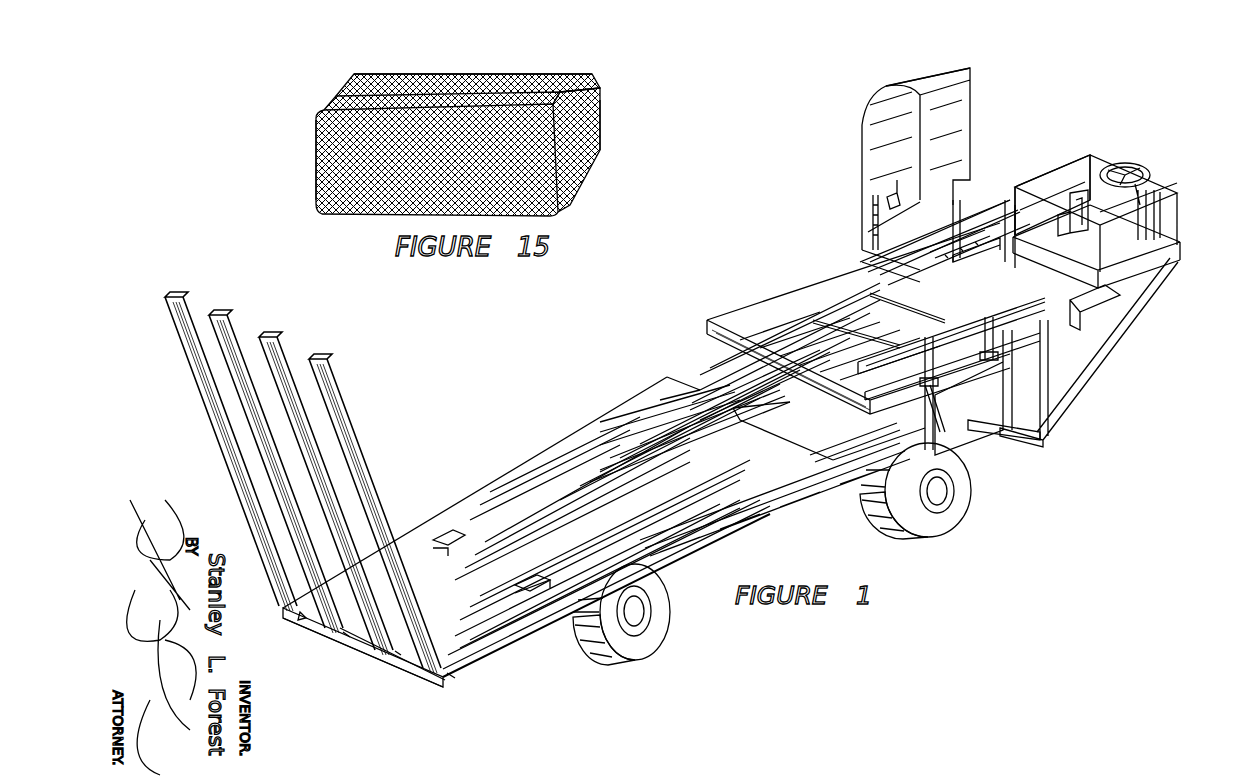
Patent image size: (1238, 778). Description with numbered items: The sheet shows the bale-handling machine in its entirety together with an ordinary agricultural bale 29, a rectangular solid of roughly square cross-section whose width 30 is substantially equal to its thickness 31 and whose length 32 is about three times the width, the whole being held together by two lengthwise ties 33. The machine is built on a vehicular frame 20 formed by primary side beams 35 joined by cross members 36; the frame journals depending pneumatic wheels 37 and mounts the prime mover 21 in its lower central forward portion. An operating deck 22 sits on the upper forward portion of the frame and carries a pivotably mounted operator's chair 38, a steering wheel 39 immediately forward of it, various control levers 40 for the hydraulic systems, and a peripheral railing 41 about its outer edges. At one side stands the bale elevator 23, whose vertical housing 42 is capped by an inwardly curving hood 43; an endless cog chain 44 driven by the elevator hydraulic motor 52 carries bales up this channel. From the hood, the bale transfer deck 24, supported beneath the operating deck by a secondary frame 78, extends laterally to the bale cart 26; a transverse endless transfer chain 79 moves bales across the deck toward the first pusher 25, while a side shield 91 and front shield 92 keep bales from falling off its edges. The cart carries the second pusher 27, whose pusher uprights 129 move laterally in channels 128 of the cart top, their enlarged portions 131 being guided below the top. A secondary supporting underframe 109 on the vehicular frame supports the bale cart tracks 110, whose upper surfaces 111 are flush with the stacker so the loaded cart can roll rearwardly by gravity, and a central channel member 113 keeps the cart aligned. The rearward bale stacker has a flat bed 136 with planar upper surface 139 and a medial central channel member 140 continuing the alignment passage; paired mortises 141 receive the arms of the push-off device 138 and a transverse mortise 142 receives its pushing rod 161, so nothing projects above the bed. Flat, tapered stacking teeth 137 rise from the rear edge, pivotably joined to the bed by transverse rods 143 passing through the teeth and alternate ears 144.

In FIG. 1, the vehicular frame 20 is at (790, 505).
In FIG. 1, the prime mover 21 is at (870, 470).
In FIG. 1, the operating deck 22 is at (1170, 232).
In FIG. 1, the bale elevator 23 is at (872, 136).
In FIG. 1, the bale transfer deck 24 is at (946, 274).
In FIG. 1, the first pusher 25 is at (1040, 290).
In FIG. 1, the bale cart 26 is at (770, 312).
In FIG. 1, the second pusher 27 is at (912, 336).
In FIG. 15, the bale 29 is at (535, 64).
In FIG. 15, the width 30 is at (600, 104).
In FIG. 15, the thickness 31 is at (602, 130).
In FIG. 15, the length 32 is at (318, 110).
In FIG. 15, the lengthwise ties 33 is at (480, 70).
In FIG. 1, the primary side beams 35 is at (727, 532).
In FIG. 1, the cross members 36 is at (945, 445).
In FIG. 1, the pneumatic wheels 37 is at (972, 515).
In FIG. 1, the operator's chair 38 is at (1060, 206).
In FIG. 1, the steering wheel 39 is at (1148, 168).
In FIG. 1, the control levers 40 is at (1175, 195).
In FIG. 1, the peripheral railing 41 is at (1060, 165).
In FIG. 1, the vertical housing 42 is at (862, 250).
In FIG. 1, the hood 43 is at (970, 72).
In FIG. 1, the endless cog chain 44 is at (870, 210).
In FIG. 1, the elevator hydraulic motor 52 is at (895, 198).
In FIG. 1, the secondary frame 78 is at (1050, 365).
In FIG. 1, the transfer chain 79 is at (980, 280).
In FIG. 1, the side shield 91 is at (930, 265).
In FIG. 1, the front shield 92 is at (985, 240).
In FIG. 1, the secondary supporting underframe 109 is at (855, 440).
In FIG. 1, the bale cart tracks 110 is at (770, 420).
In FIG. 1, the upper surfaces 111 is at (738, 360).
In FIG. 1, the central channel member 113 is at (715, 400).
In FIG. 1, the channels 128 is at (860, 338).
In FIG. 1, the pusher uprights 129 is at (905, 385).
In FIG. 1, the enlarged portions 131 is at (915, 418).
In FIG. 1, the bed 136 is at (545, 498).
In FIG. 1, the stacking teeth 137 is at (218, 314).
In FIG. 1, the push-off device 138 is at (560, 572).
In FIG. 1, the upper surface 139 is at (700, 540).
In FIG. 1, the central channel member 140 is at (680, 450).
In FIG. 1, the paired mortises 141 is at (528, 594).
In FIG. 1, the transverse mortise 142 is at (392, 655).
In FIG. 1, the transverse rods 143 is at (415, 668).
In FIG. 1, the ears 144 is at (305, 618).
In FIG. 1, the pushing rod 161 is at (455, 678).